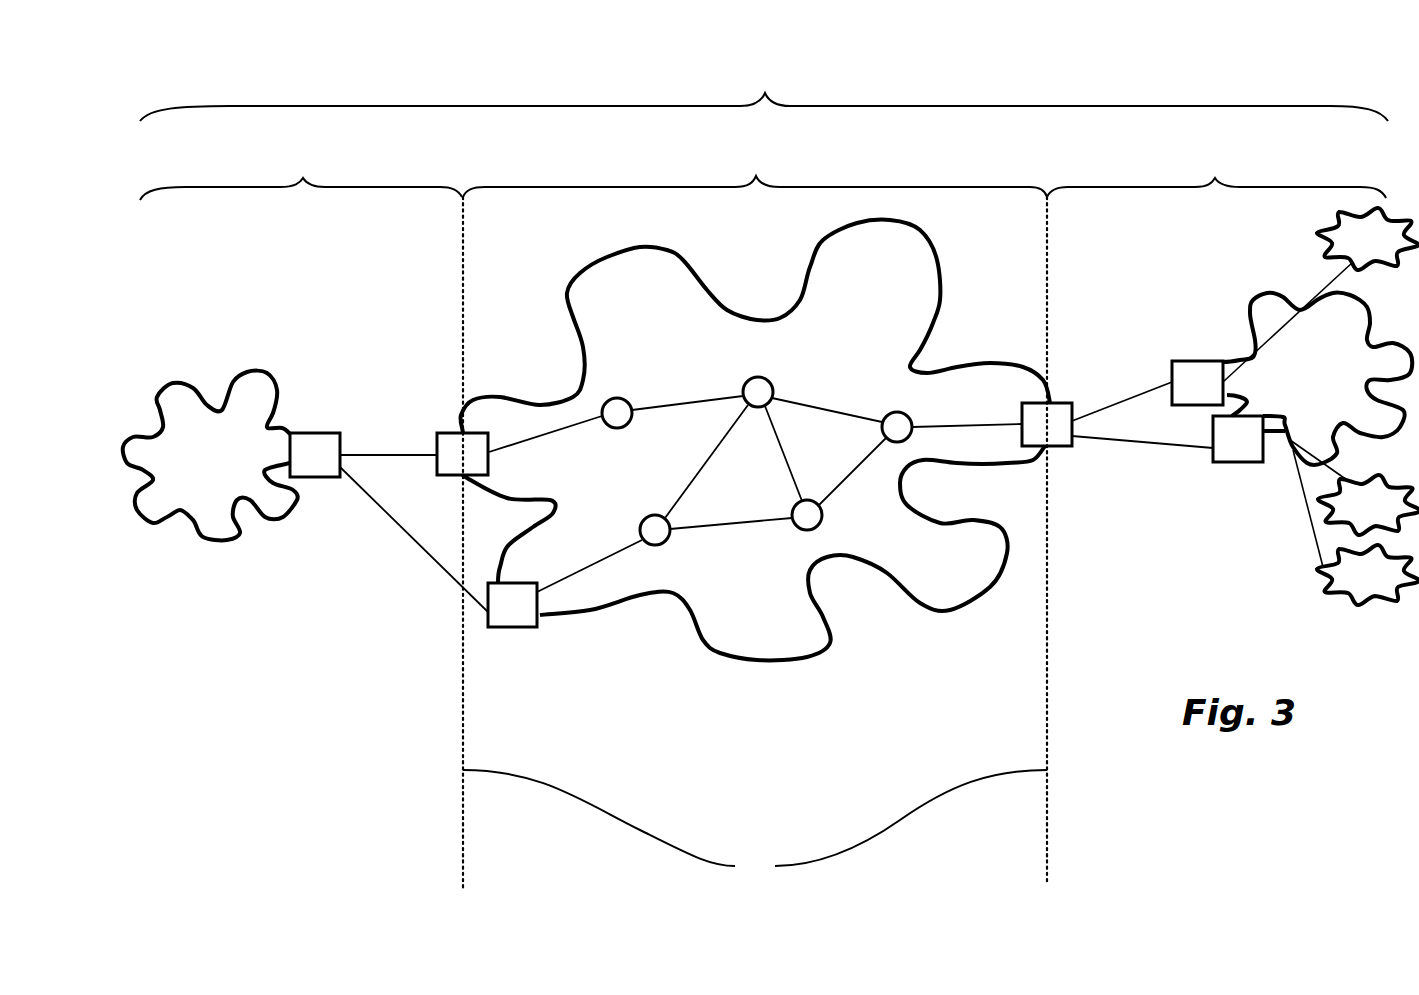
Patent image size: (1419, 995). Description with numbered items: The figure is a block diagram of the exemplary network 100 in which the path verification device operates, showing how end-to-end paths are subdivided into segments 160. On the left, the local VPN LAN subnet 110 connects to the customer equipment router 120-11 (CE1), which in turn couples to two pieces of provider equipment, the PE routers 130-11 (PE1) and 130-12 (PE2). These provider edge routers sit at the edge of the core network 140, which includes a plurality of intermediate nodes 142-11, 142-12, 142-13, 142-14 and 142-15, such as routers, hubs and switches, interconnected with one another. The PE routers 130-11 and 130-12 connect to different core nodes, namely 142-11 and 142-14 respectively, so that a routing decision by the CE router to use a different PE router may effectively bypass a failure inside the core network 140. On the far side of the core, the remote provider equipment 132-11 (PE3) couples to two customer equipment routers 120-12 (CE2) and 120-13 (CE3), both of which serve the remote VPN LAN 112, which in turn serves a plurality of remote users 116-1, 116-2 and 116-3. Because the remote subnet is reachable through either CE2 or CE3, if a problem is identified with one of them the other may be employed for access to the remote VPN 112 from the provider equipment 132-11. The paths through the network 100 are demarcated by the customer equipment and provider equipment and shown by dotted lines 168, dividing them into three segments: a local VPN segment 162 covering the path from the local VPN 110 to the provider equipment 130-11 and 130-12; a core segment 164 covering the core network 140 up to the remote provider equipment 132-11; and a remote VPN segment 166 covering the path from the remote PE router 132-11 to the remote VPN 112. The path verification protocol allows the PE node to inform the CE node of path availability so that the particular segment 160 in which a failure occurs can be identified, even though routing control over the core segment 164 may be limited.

The network 100 is at (435, 682).
The local VPN LAN subnet 110 is at (215, 540).
The remote VPN LAN 112 is at (1252, 308).
The remote user 116-1 is at (1392, 250).
The remote user 116-2 is at (1393, 516).
The remote user 116-3 is at (1392, 586).
The customer equipment 120-11 is at (327, 478).
The customer equipment 120-12 is at (1197, 361).
The customer equipment 120-13 is at (1227, 462).
The provider equipment 130-11 is at (437, 434).
The provider equipment 130-12 is at (525, 628).
The remote provider equipment 132-11 is at (1067, 447).
The core network 140 is at (753, 660).
The intermediate node 142-11 is at (622, 398).
The intermediate node 142-12 is at (757, 377).
The intermediate node 142-13 is at (900, 411).
The intermediate node 142-14 is at (660, 545).
The intermediate node 142-15 is at (800, 531).
The segments 160 is at (763, 92).
The local VPN segment 162 is at (303, 177).
The core segment 164 is at (755, 177).
The remote VPN segment 166 is at (1215, 177).
The dotted lines 168 is at (755, 823).